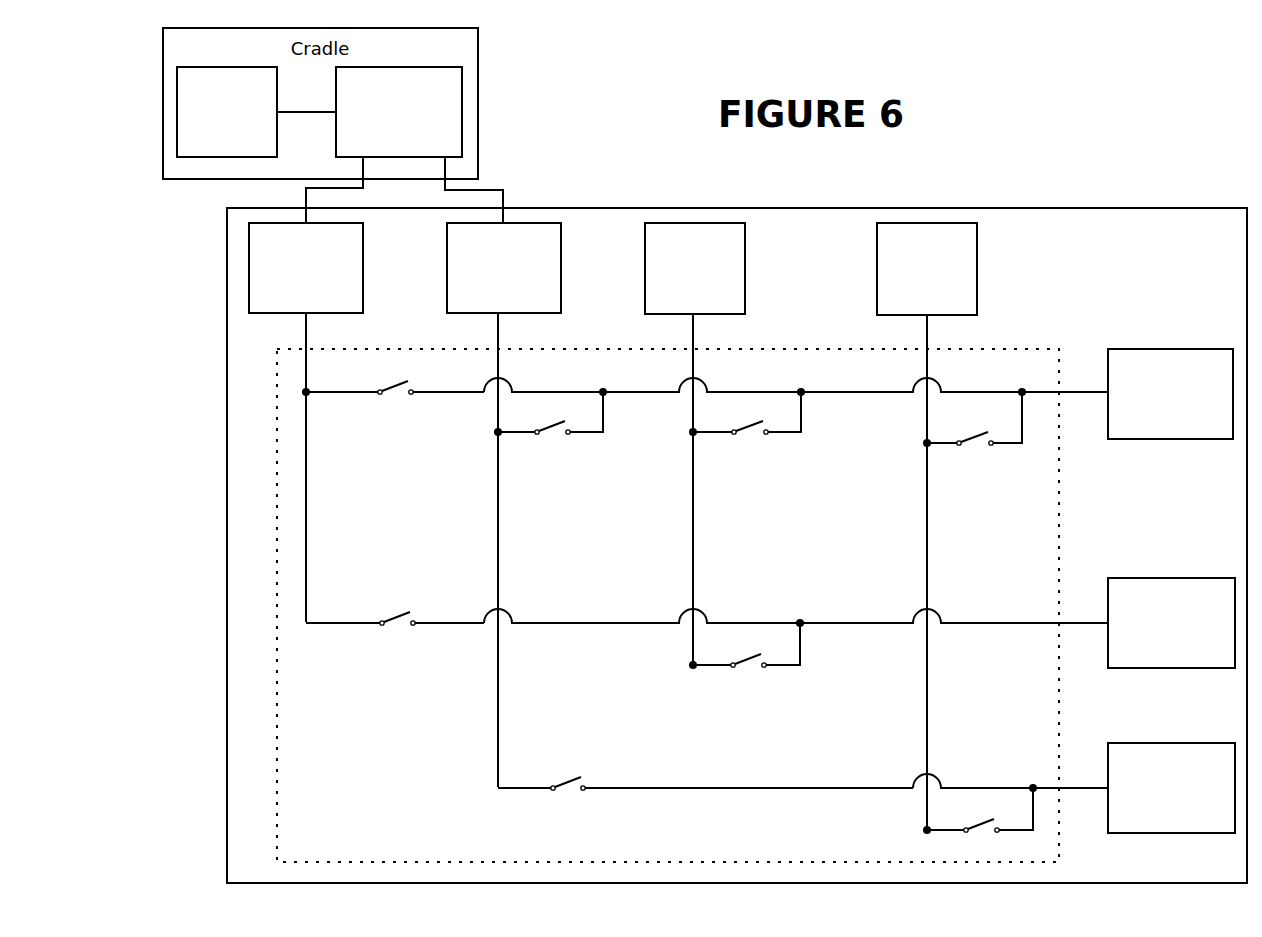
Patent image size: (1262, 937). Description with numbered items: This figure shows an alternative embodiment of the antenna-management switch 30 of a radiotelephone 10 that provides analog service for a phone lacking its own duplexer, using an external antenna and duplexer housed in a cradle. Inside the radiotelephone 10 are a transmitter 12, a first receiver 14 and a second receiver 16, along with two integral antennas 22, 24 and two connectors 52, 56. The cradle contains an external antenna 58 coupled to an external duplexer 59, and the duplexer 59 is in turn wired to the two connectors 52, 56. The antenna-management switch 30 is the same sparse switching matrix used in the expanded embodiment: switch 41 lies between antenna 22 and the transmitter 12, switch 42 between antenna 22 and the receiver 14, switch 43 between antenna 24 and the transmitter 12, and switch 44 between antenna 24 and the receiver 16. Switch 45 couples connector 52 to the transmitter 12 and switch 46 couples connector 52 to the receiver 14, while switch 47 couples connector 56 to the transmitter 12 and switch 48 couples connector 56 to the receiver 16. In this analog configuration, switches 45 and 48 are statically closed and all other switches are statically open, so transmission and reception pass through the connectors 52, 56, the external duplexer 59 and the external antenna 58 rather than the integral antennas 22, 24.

The radiotelephone 10 is at (1149, 292).
The transmitter 12 is at (1159, 429).
The receiver 14 is at (1160, 661).
The receiver 16 is at (1160, 826).
The antenna 22 is at (684, 304).
The antenna 24 is at (916, 304).
The antenna-management switch 30 is at (288, 847).
The switch 41 is at (740, 461).
The switch 42 is at (743, 697).
The switch 43 is at (963, 477).
The switch 44 is at (974, 859).
The switch 45 is at (383, 424).
The switch 46 is at (384, 657).
The switch 47 is at (543, 461).
The switch 48 is at (556, 821).
The connector 52 is at (295, 304).
The connector 56 is at (493, 304).
The external antenna 58 is at (216, 146).
The external duplexer 59 is at (388, 146).